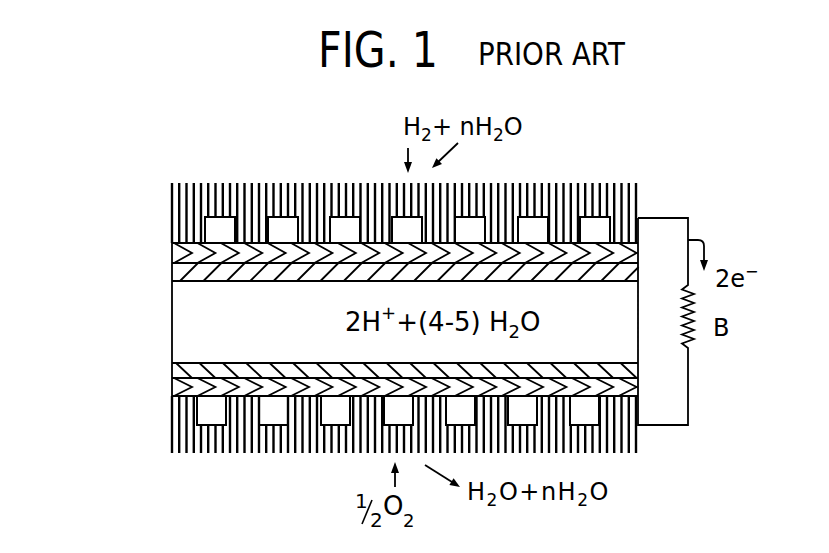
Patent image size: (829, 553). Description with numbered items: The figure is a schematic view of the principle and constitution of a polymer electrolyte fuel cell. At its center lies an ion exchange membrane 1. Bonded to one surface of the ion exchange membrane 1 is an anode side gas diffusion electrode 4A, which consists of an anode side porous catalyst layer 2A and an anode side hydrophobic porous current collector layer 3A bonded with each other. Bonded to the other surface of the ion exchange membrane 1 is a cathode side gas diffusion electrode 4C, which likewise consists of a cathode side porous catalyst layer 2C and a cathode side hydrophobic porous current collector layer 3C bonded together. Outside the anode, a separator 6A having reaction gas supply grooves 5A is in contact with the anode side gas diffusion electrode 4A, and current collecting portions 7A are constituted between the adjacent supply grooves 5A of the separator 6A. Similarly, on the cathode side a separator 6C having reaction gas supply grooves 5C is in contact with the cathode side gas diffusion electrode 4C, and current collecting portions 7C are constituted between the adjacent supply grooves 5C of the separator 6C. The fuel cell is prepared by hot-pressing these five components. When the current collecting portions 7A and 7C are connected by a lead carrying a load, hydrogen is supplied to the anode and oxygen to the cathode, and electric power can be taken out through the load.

The ion exchange membrane 1 is at (334, 316).
The anode side porous catalyst layer 2A is at (172, 272).
The anode side hydrophobic porous current collector layer 3A is at (172, 253).
The anode side gas diffusion electrode 4A is at (90, 217).
The reaction gas supply grooves 5A is at (226, 228).
The separator 6A is at (300, 214).
The current collecting portions 7A is at (382, 250).
The cathode side porous catalyst layer 2C is at (172, 371).
The cathode side hydrophobic porous current collector layer 3C is at (172, 386).
The cathode side gas diffusion electrode 4C is at (100, 352).
The reaction gas supply grooves 5C is at (213, 423).
The separator 6C is at (284, 423).
The current collecting portions 7C is at (297, 400).